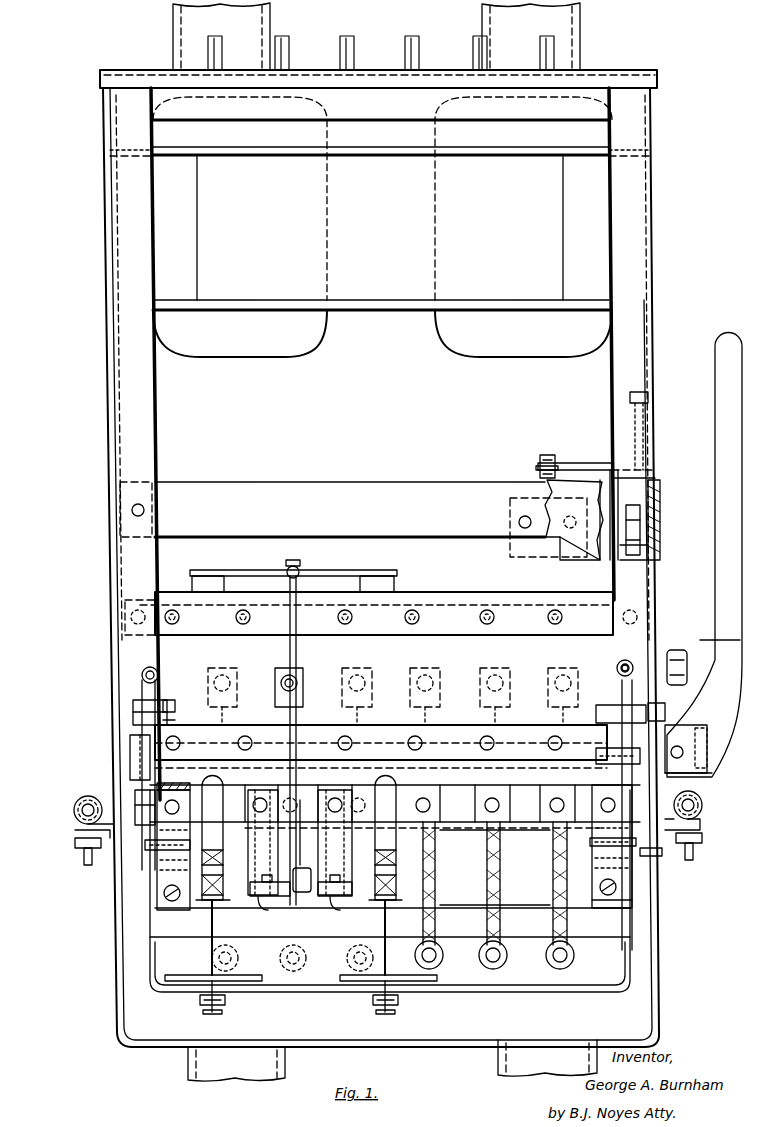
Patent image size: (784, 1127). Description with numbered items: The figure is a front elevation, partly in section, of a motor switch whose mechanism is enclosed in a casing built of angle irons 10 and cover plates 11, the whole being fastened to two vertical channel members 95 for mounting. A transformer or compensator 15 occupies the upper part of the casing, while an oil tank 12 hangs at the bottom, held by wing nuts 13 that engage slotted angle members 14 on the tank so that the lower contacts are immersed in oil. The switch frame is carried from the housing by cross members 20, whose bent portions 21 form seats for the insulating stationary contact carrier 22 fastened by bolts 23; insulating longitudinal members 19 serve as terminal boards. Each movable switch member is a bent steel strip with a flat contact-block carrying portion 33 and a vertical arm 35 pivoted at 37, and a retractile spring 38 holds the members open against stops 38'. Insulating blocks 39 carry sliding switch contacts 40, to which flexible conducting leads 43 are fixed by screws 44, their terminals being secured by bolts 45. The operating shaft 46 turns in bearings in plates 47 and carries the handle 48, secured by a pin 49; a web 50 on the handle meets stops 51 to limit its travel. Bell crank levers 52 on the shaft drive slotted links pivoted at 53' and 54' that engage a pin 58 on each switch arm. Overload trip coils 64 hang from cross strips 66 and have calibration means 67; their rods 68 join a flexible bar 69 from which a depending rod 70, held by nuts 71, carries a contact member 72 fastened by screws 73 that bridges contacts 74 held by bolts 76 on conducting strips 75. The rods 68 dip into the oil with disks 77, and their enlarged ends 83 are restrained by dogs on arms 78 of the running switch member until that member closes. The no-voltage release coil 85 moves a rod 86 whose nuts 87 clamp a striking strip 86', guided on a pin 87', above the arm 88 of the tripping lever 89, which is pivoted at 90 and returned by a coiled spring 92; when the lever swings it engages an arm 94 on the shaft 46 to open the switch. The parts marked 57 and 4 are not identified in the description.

The angle irons 10 is at (125, 425).
The cover plates 11 is at (103, 396).
The oil tank 12 is at (116, 946).
The wing nuts 13 is at (76, 848).
The slotted angle members 14 is at (75, 827).
The transformer or compensator 15 is at (305, 353).
The longitudinal members 19 is at (518, 790).
The cross members 20 is at (160, 880).
The bent portions 21 is at (620, 898).
The stationary switch contact carrier 22 is at (495, 867).
The bolts 23 is at (165, 895).
The flat contact-block carrying portion 33 is at (486, 994).
The vertical arm 35 is at (634, 939).
The pivot 37 is at (135, 805).
The retractile spring 38 is at (387, 661).
The stops 38' is at (437, 857).
The switch contact carrying blocks 39 is at (586, 946).
The switch contacts 40 is at (292, 968).
The flexible conducting leads 43 is at (487, 870).
The screws 44 is at (479, 958).
The bolts 45 is at (480, 805).
The operating shaft 46 is at (685, 748).
The plates 47 is at (130, 745).
The switch operating handle 48 is at (718, 534).
The pin 49 is at (690, 770).
The web 50 is at (688, 632).
The stops 51 is at (690, 666).
The bell crank levers 52 is at (140, 765).
The pivot 53' is at (684, 705).
The pivot 54' is at (116, 712).
The pin 57 is at (165, 740).
The pin 58 is at (612, 753).
The overload trip coils 64 is at (393, 683).
The cross strips 66 is at (392, 726).
The calibration adjusting means 67 is at (207, 898).
The rod 68 is at (210, 960).
The flexible bar 69 is at (262, 561).
The depending rod 70 is at (300, 572).
The nuts 71 is at (293, 565).
The separable contact member 72 is at (310, 876).
The screws 73 is at (302, 860).
The contacts 74 is at (272, 882).
The conducting strips 75 is at (255, 792).
The bolts 76 is at (258, 900).
The disks 77 is at (185, 984).
The arms 78 is at (206, 1005).
The enlarged ends 83 is at (299, 1025).
The no-voltage release coil 85 is at (475, 537).
The rod 86 is at (524, 458).
The striking strip 86' is at (575, 453).
The nuts 87 is at (522, 466).
The pin 87' is at (663, 431).
The arm 88 is at (617, 490).
The tripping lever 89 is at (660, 552).
The pivot 90 is at (650, 518).
The coiled spring 92 is at (655, 496).
The arm 94 is at (646, 477).
The vertical channel members 95 is at (270, 27).
The pin 4 is at (633, 676).